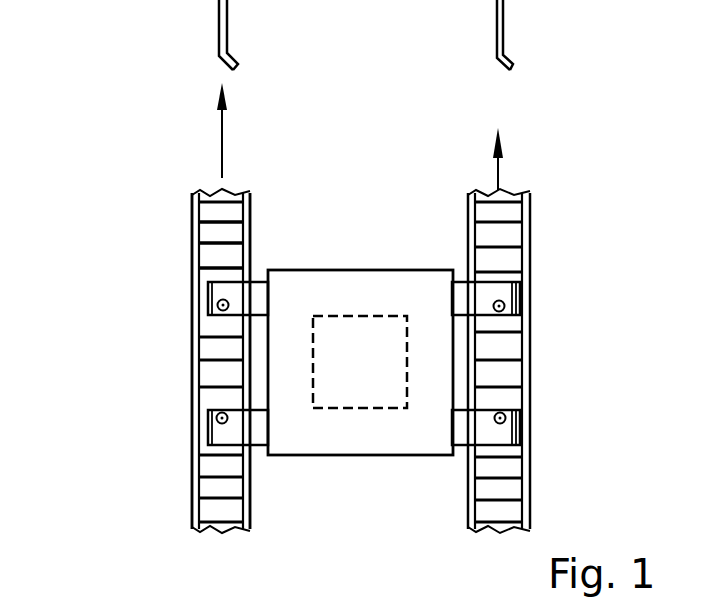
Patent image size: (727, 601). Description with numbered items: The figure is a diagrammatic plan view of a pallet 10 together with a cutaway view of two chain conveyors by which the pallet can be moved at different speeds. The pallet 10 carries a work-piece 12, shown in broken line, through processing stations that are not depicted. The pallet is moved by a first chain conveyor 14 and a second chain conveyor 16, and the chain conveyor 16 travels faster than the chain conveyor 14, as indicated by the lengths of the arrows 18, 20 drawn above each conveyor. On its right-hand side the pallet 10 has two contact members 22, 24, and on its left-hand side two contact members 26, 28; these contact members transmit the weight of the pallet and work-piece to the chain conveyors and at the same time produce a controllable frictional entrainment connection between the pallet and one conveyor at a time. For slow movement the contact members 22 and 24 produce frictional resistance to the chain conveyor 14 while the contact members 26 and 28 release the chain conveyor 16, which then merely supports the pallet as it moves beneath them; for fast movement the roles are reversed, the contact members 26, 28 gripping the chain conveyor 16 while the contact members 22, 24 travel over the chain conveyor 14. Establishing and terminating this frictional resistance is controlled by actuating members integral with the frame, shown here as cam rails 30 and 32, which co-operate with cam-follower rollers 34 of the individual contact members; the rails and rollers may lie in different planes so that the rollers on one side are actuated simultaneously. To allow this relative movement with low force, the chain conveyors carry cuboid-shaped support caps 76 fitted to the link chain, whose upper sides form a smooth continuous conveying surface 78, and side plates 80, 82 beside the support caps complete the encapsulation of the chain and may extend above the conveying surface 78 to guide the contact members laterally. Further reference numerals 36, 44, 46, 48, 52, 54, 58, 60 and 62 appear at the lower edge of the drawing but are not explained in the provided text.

The pallet 10 is at (327, 258).
The work-piece 12 is at (378, 316).
The first chain conveyor 14 is at (505, 238).
The second chain conveyor 16 is at (200, 380).
The arrow 18 is at (498, 168).
The arrow 20 is at (222, 128).
The contact member 22 is at (514, 300).
The contact member 24 is at (497, 437).
The contact member 26 is at (221, 292).
The contact member 28 is at (210, 437).
The cam rail 30 is at (503, 40).
The cam rail 32 is at (219, 33).
The cam-follower roller 34 is at (501, 412).
The lower element 36 is at (417, 600).
The lower element 44 is at (391, 595).
The lower element 46 is at (336, 595).
The lower element 48 is at (281, 600).
The lower element 52 is at (149, 595).
The lower element 54 is at (96, 595).
The lower element 58 is at (172, 600).
The lower element 60 is at (247, 595).
The lower element 62 is at (201, 595).
The support cap 76 is at (210, 258).
The conveying surface 78 is at (221, 213).
The side plate 80 is at (252, 492).
The side plate 82 is at (198, 489).